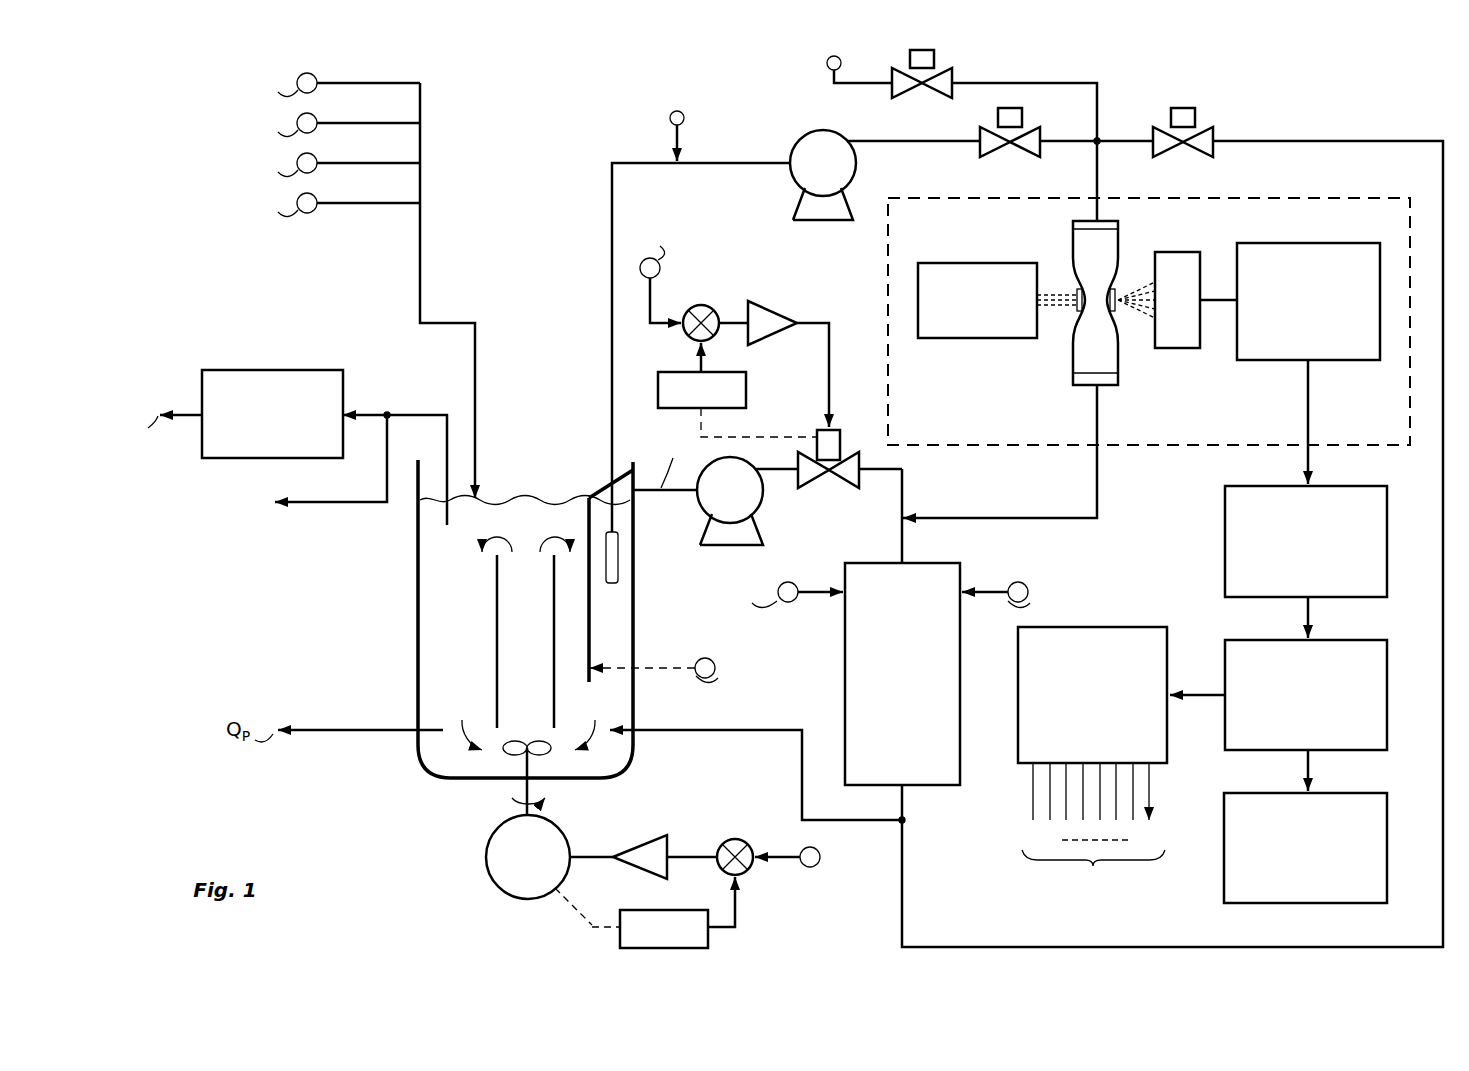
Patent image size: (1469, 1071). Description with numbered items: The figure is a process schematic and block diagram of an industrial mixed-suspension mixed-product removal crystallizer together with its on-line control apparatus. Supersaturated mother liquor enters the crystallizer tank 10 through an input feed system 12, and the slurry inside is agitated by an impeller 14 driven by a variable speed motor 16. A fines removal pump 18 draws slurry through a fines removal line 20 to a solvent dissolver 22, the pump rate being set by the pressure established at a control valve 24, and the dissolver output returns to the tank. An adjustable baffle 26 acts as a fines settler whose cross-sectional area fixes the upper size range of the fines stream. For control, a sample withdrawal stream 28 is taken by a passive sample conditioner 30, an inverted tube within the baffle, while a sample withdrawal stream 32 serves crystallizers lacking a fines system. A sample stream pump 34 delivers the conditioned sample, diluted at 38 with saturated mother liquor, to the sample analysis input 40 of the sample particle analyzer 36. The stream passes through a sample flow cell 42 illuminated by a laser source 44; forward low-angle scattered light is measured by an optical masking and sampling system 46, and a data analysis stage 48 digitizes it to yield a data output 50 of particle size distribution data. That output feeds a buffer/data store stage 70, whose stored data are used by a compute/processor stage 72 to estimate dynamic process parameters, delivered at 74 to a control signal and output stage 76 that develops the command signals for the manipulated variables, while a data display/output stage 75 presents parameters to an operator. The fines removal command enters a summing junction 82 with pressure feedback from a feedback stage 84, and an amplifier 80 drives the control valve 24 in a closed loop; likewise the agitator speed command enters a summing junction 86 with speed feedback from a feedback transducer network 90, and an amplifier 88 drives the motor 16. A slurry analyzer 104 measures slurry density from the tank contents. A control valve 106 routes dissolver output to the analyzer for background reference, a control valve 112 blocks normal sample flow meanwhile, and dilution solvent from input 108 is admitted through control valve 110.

The crystallizer tank 10 is at (412, 608).
The input feed system 12 is at (452, 323).
The impeller 14 is at (505, 758).
The variable speed motor 16 is at (492, 883).
The fines removal pump 18 is at (768, 502).
The fines removal line 20 is at (681, 492).
The solvent dissolver 22 is at (947, 563).
The control valve 24 is at (838, 452).
The adjustable baffle 26 is at (588, 528).
The sample withdrawal stream 28 is at (622, 160).
The passive sample conditioner 30 is at (620, 557).
The sample withdrawal stream 32 is at (278, 506).
The sample stream pump 34 is at (801, 134).
The sample particle analyzer 36 is at (1032, 452).
The dilution point 38 is at (690, 92).
The sample analysis input 40 is at (1097, 174).
The sample flow cell 42 is at (1118, 368).
The laser source 44 is at (985, 263).
The optical masking and sampling system 46 is at (1188, 252).
The data analysis stage 48 is at (1325, 243).
The data output 50 is at (1300, 455).
The buffer/data store stage 70 is at (1387, 539).
The compute/processor stage 72 is at (1387, 682).
The estimated process parameter output 74 is at (1200, 697).
The data display/output stage 75 is at (1387, 827).
The control signal and output stage 76 is at (1148, 627).
The amplifier 80 is at (768, 307).
The summing junction 82 is at (705, 303).
The feedback stage 84 is at (746, 388).
The summing junction 86 is at (744, 838).
The amplifier 88 is at (641, 847).
The feedback transducer network 90 is at (708, 947).
The slurry analyzer 104 is at (215, 461).
The control valve 106 is at (1202, 114).
The dilution solvent input 108 is at (840, 60).
The control valve 110 is at (950, 77).
The control valve 112 is at (998, 117).